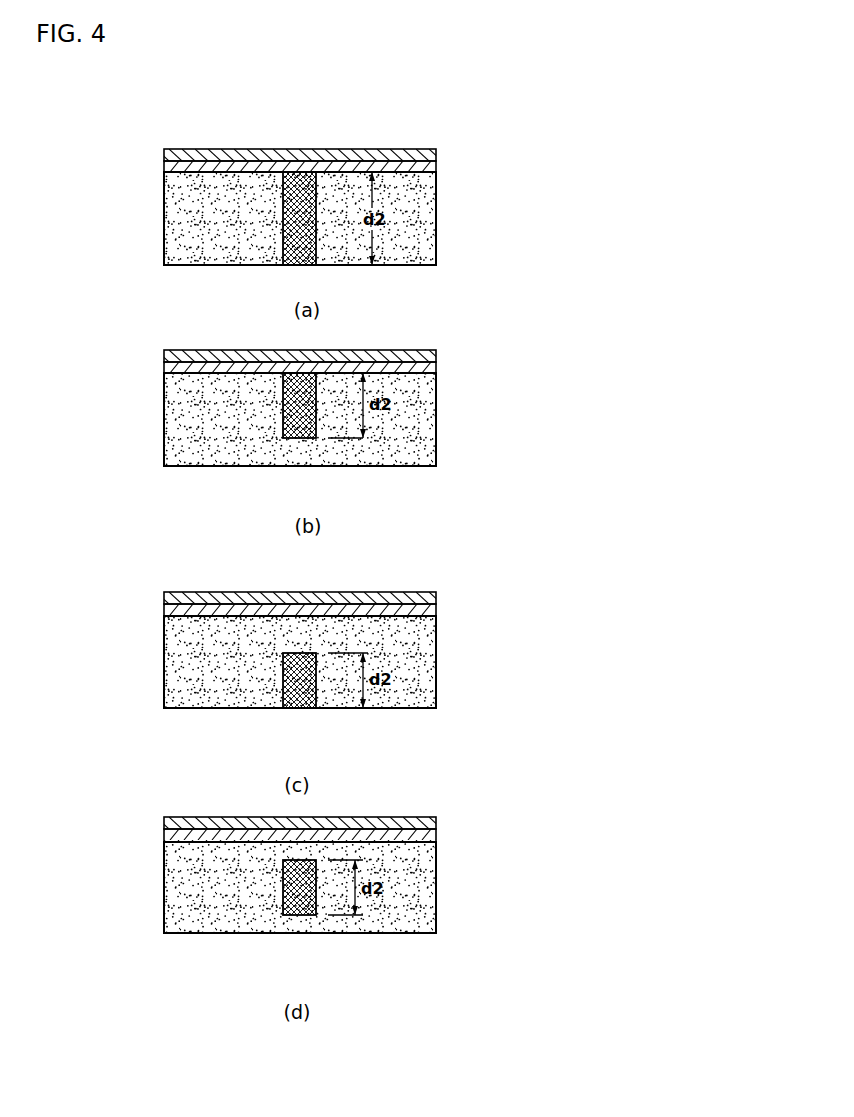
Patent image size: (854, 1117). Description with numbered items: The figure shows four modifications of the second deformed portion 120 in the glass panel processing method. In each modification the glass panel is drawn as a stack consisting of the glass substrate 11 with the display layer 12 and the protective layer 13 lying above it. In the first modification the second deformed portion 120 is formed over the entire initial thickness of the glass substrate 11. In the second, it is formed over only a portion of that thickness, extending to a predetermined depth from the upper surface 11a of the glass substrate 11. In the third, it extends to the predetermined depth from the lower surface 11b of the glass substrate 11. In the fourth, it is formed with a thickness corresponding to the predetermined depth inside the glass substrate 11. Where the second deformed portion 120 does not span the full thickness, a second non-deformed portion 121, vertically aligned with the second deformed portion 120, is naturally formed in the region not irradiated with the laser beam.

The glass substrate 11 is at (413, 227).
The upper surface of the glass substrate 11a is at (207, 375).
The lower surface of the glass substrate 11b is at (213, 708).
The display layer 12 is at (427, 168).
The protective layer 13 is at (435, 153).
The second deformed portion 120 is at (307, 177).
The second non-deformed portion 121 is at (302, 452).